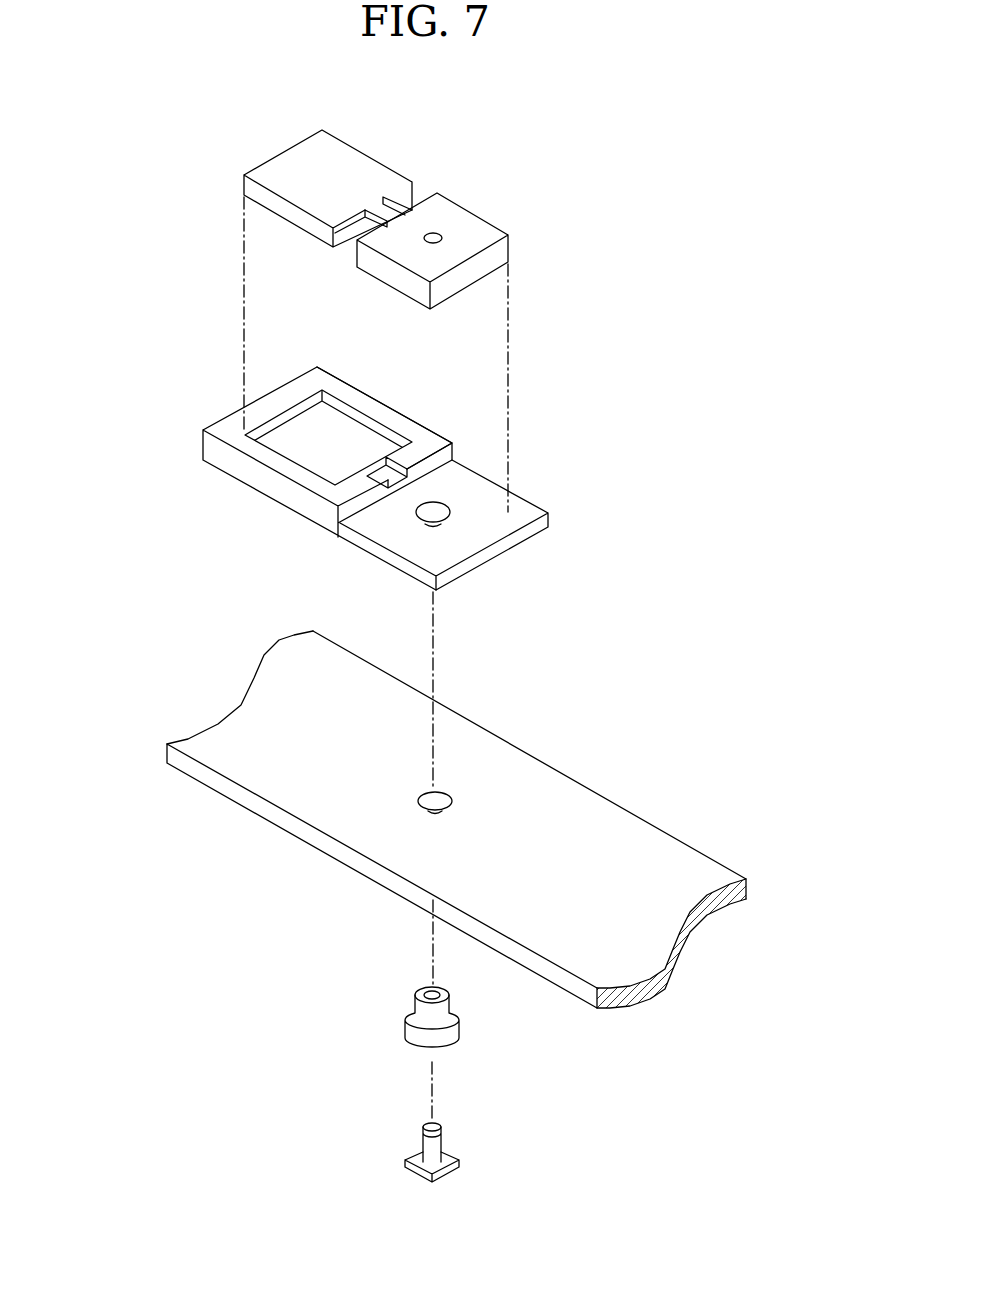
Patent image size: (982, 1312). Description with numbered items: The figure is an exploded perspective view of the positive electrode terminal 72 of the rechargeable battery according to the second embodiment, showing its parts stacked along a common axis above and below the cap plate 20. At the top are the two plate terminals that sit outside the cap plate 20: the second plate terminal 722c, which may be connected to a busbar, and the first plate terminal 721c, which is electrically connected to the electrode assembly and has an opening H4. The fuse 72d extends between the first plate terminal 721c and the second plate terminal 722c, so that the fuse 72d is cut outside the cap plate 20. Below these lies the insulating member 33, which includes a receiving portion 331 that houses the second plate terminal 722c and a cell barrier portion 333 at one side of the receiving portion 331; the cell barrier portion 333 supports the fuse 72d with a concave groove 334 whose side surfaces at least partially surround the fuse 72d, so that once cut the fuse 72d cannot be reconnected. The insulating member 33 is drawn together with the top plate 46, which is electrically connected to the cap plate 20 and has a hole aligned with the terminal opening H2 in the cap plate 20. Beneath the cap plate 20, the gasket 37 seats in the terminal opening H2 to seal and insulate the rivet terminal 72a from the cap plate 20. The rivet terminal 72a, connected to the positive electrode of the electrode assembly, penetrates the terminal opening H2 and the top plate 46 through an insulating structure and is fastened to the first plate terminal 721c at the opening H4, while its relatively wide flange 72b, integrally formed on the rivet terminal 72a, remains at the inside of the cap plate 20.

The positive electrode terminal 72 is at (305, 129).
The second plate terminal 722c is at (337, 155).
The fuse 72d is at (387, 207).
The first plate terminal 721c is at (438, 215).
The opening H4 is at (440, 233).
The insulating member 33 is at (213, 457).
The receiving portion 331 is at (300, 457).
The cell barrier portion 333 is at (427, 443).
The concave groove 334 is at (363, 468).
The top plate 46 is at (517, 515).
The cap plate 20 is at (633, 830).
The terminal opening H2 is at (450, 799).
The gasket 37 is at (408, 1013).
The rivet terminal 72a is at (427, 1145).
The flange 72b is at (415, 1172).